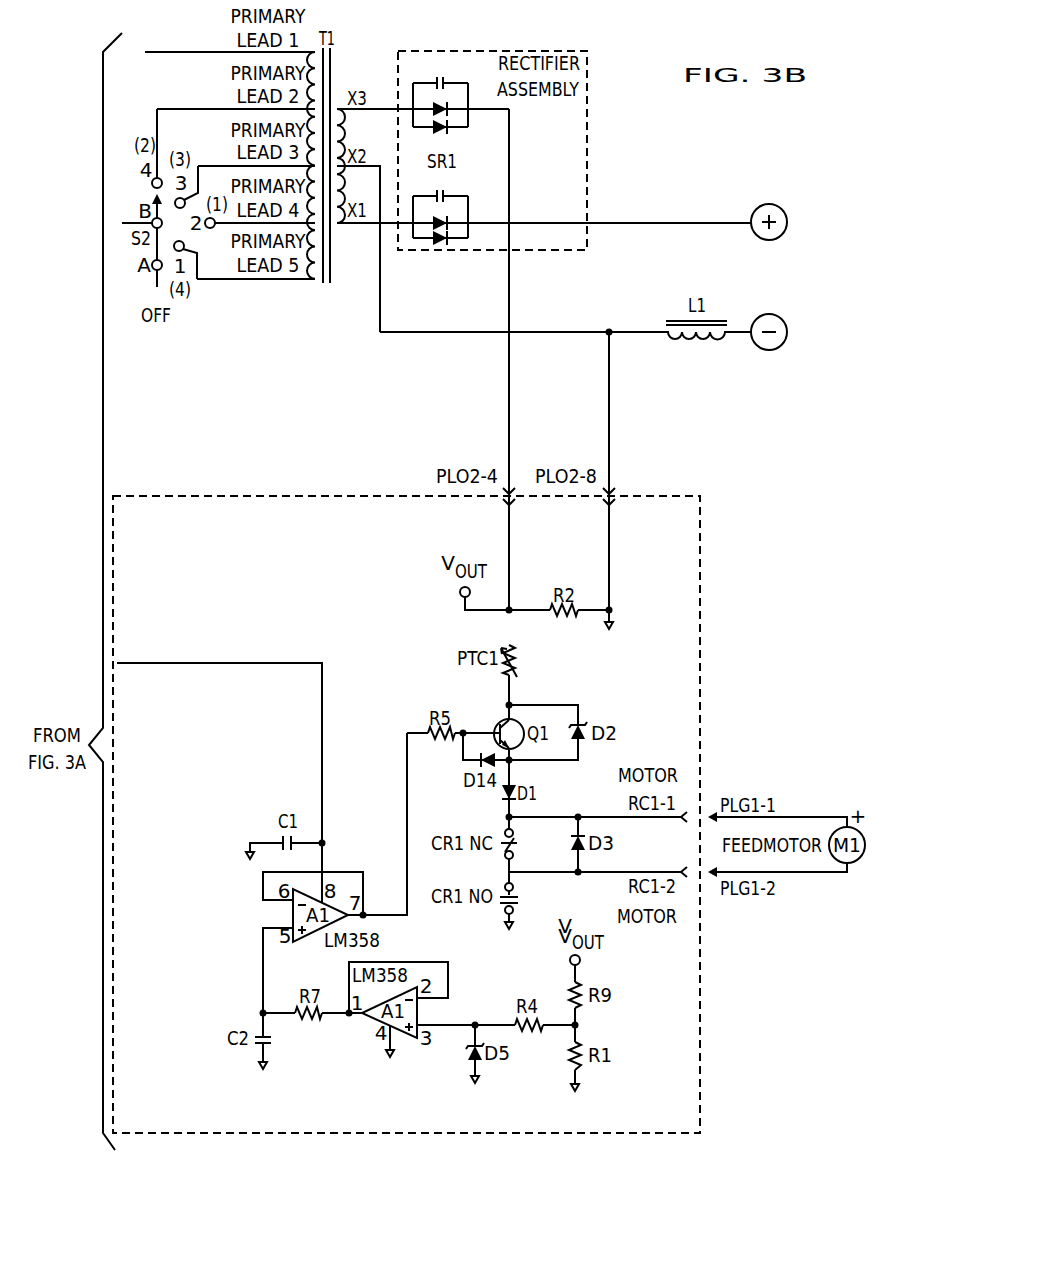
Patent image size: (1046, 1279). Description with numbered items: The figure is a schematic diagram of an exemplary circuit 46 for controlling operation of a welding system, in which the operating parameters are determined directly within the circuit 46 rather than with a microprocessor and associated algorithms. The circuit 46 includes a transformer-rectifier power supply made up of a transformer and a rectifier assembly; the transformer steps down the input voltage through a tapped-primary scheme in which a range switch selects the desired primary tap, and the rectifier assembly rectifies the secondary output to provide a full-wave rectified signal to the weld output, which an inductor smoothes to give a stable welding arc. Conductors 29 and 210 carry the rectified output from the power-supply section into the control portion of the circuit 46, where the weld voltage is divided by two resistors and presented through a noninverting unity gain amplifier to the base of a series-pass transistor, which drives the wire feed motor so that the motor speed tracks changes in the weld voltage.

The conductor PLO2-4 29 is at (498, 359).
The conductor PLO2-8 210 is at (593, 471).
The circuit 46 is at (776, 1080).